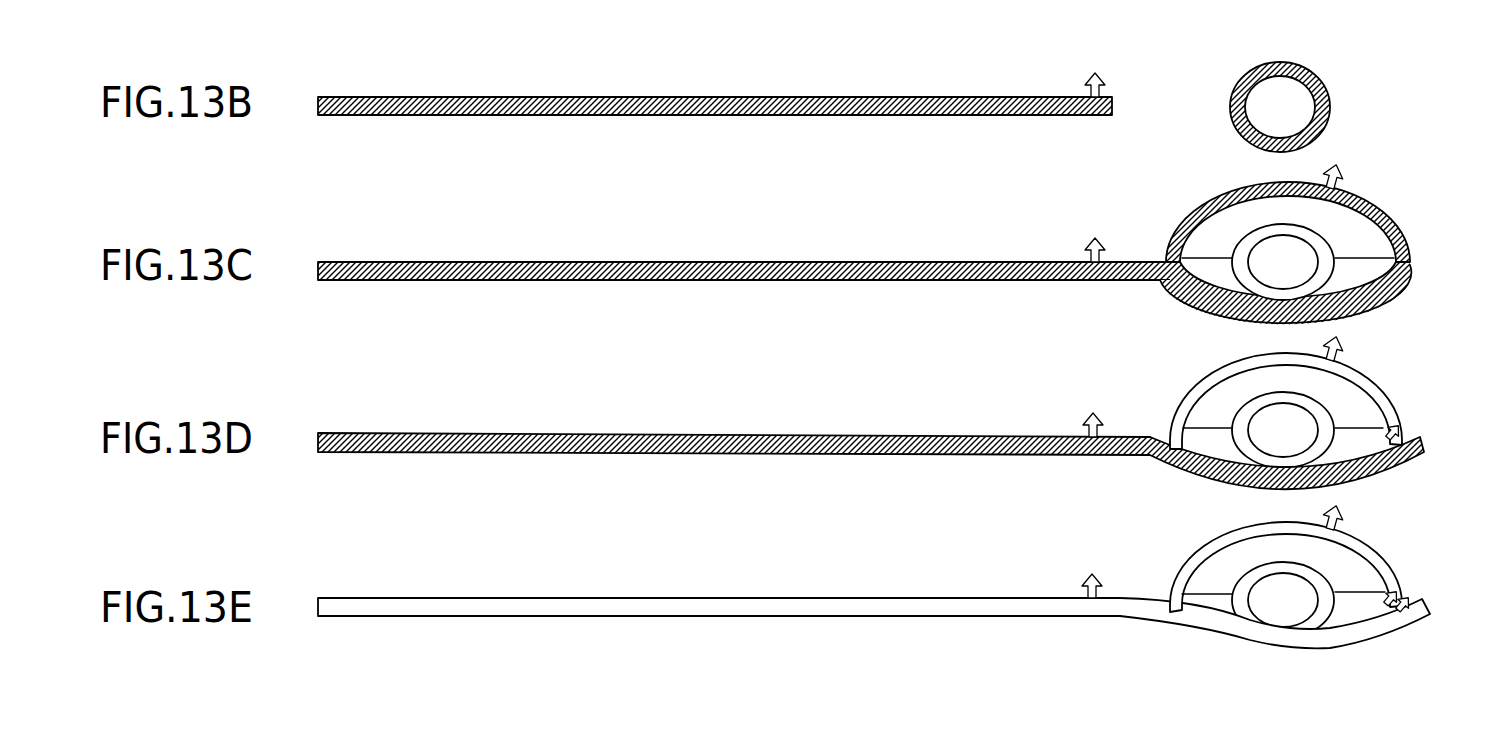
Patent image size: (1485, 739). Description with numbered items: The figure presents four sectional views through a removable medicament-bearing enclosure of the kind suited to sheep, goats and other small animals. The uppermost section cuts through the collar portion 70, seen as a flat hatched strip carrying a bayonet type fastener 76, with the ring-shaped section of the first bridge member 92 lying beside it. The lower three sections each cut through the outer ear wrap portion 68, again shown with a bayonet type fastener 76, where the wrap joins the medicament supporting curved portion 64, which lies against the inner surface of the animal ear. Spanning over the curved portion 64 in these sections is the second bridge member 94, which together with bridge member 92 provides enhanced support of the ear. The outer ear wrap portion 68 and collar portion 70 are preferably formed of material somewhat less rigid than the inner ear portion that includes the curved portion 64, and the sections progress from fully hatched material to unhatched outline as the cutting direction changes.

In FIG. 13B, the collar portion 70 is at (540, 97).
In FIG. 13B, the bayonet type fasteners 76 is at (1098, 74).
In FIG. 13C, the bayonet type fasteners 76 is at (1098, 240).
In FIG. 13D, the bayonet type fasteners 76 is at (1098, 412).
In FIG. 13E, the bayonet type fasteners 76 is at (1098, 578).
In FIG. 13B, the bridge member 92 is at (1296, 66).
In FIG. 13C, the outer ear wrap portion 68 is at (513, 262).
In FIG. 13D, the outer ear wrap portion 68 is at (518, 433).
In FIG. 13E, the outer ear wrap portion 68 is at (512, 598).
In FIG. 13C, the bridge member 94 is at (1380, 217).
In FIG. 13D, the bridge member 94 is at (1367, 378).
In FIG. 13E, the bridge member 94 is at (1375, 556).
In FIG. 13C, the medicament supporting curved portion 64 is at (1372, 298).
In FIG. 13D, the medicament supporting curved portion 64 is at (1380, 468).
In FIG. 13E, the medicament supporting curved portion 64 is at (1392, 622).